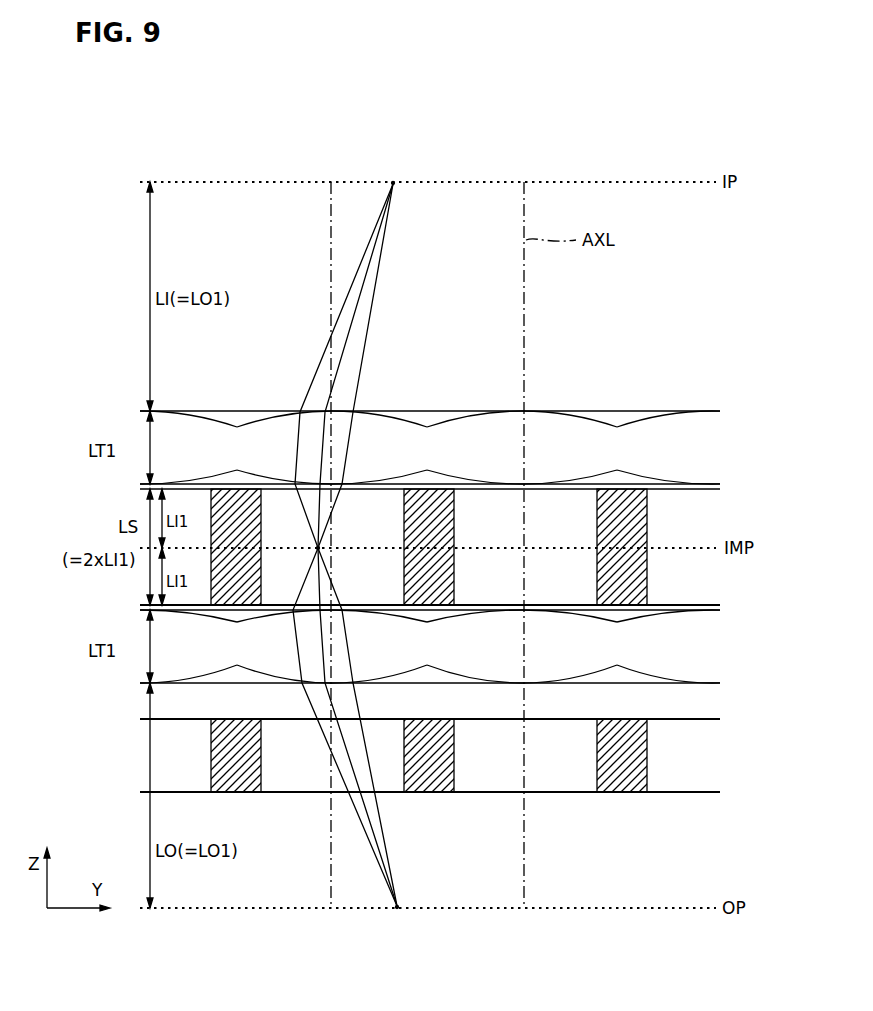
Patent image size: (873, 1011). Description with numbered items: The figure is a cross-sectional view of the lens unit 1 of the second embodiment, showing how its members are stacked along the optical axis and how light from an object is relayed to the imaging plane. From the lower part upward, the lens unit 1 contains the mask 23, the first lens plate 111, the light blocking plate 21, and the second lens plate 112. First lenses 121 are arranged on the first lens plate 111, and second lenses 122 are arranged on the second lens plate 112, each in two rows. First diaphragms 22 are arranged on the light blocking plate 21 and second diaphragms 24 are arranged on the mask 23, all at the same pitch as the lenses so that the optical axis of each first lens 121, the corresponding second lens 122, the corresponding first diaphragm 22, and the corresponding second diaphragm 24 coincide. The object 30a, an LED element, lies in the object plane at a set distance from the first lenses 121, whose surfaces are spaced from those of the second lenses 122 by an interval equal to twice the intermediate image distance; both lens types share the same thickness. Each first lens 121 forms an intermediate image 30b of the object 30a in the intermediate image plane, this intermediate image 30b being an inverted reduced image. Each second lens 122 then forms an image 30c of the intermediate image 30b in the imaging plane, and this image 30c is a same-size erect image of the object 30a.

The lens unit 1 is at (762, 406).
The light blocking plate 21 is at (648, 514).
The first diaphragm 22 is at (585, 586).
The mask 23 is at (623, 794).
The second diaphragm 24 is at (556, 779).
The first lens plate 111 is at (672, 672).
The second lens plate 112 is at (581, 427).
The first lens 121 is at (675, 686).
The second lens 122 is at (611, 413).
The object 30a is at (397, 907).
The intermediate image 30b is at (321, 547).
The image 30c is at (393, 183).